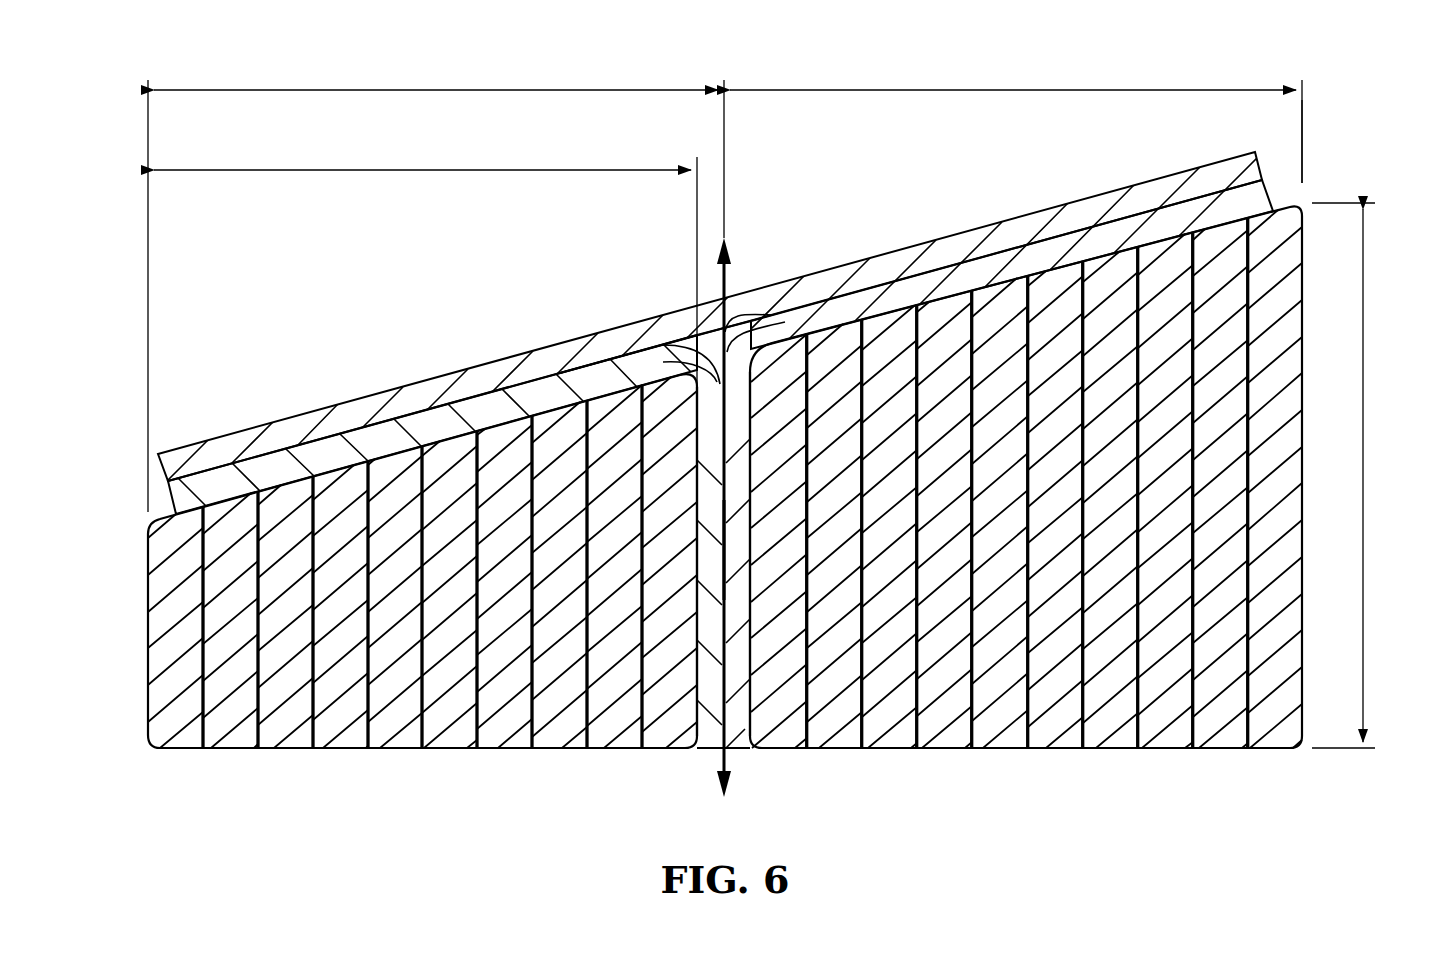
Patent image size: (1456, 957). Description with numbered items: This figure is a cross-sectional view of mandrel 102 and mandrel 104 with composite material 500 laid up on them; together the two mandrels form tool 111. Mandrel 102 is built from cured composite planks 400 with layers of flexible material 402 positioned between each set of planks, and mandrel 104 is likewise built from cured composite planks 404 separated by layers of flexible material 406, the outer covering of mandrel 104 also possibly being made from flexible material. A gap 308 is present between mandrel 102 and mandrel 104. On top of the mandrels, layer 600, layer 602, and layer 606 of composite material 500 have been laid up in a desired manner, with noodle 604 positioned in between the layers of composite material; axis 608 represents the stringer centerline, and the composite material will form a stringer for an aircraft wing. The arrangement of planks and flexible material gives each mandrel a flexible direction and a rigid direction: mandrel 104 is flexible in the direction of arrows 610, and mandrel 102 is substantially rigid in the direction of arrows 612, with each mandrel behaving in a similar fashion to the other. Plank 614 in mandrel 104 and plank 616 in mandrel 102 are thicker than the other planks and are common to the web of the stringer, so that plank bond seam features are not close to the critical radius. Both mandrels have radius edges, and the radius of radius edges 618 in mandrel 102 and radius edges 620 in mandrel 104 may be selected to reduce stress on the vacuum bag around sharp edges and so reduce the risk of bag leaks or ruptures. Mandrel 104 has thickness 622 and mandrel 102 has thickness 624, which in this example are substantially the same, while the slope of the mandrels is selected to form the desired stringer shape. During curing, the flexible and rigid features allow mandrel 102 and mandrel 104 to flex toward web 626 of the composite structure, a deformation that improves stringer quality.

The tool 111 is at (1334, 104).
The mandrel 102 is at (1306, 204).
The mandrel 104 is at (146, 529).
The gap 308 is at (693, 754).
The cured composite planks 400 is at (1122, 754).
The layers of flexible material 402 is at (973, 754).
The cured composite planks 404 is at (330, 750).
The layers of flexible material 406 is at (478, 750).
The composite material 500 is at (209, 468).
The layer 600 is at (362, 418).
The layer 602 is at (625, 372).
The noodle 604 is at (690, 340).
The layer 606 is at (1090, 245).
The axis 608 is at (735, 282).
The arrows 610 is at (414, 168).
The arrows 612 is at (1366, 328).
The plank 614 is at (652, 744).
The plank 616 is at (800, 744).
The radius edges 618 is at (1303, 757).
The radius edges 620 is at (146, 747).
The thickness 622 is at (428, 88).
The thickness 624 is at (1018, 88).
The web 626 is at (732, 554).